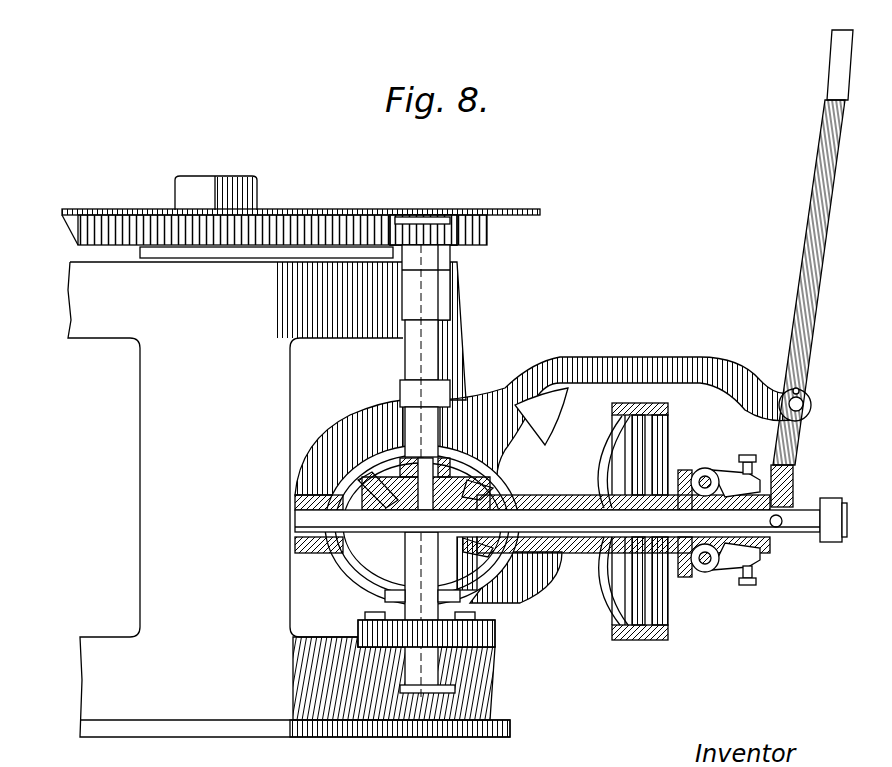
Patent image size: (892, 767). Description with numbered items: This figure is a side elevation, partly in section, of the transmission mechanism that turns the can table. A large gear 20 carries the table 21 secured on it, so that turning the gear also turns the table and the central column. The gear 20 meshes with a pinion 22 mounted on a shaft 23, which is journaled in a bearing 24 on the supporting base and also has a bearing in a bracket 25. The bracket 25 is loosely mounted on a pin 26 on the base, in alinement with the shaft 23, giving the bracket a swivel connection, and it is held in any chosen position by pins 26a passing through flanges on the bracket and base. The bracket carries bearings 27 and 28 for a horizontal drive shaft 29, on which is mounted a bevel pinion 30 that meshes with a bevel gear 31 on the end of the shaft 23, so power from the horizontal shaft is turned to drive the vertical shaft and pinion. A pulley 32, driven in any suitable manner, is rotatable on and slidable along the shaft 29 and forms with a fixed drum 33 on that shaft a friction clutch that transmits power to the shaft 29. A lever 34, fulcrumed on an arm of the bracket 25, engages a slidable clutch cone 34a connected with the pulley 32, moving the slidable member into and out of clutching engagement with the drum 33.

The large gear 20 is at (490, 232).
The table 21 is at (540, 212).
The pinion 22 is at (458, 232).
The shaft 23 is at (444, 333).
The bearing 24 is at (456, 302).
The bracket 25 is at (520, 590).
The pin 26 is at (413, 680).
The pins 26a is at (497, 612).
The bearing 27 is at (298, 528).
The bearing 28 is at (570, 548).
The horizontal drive shaft 29 is at (822, 540).
The bevel pinion 30 is at (463, 540).
The bevel gear 31 is at (385, 502).
The pulley 32 is at (655, 640).
The fixed drum 33 is at (614, 638).
The lever 34 is at (830, 60).
The slidable clutch cone 34a is at (760, 556).